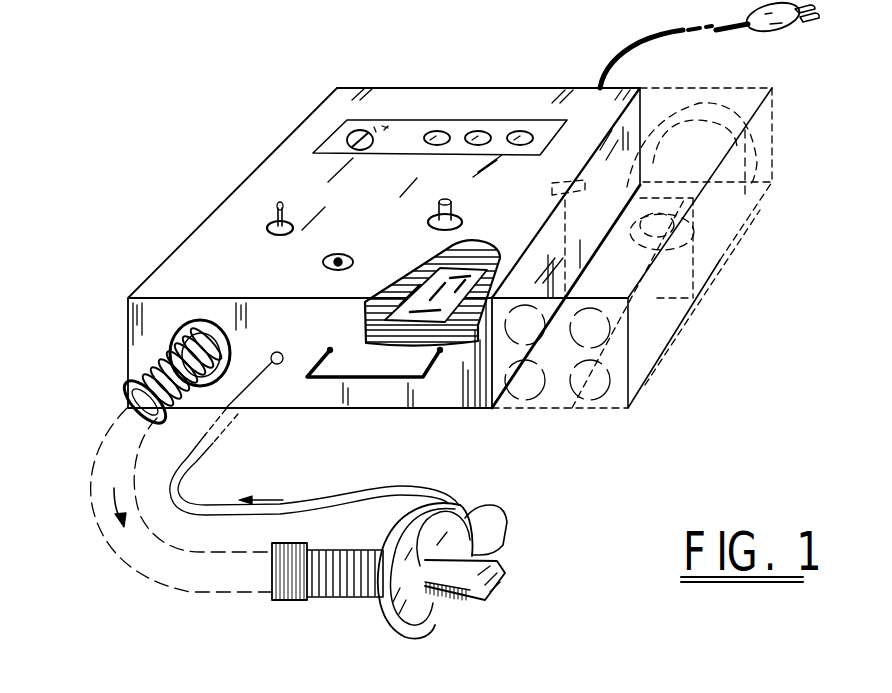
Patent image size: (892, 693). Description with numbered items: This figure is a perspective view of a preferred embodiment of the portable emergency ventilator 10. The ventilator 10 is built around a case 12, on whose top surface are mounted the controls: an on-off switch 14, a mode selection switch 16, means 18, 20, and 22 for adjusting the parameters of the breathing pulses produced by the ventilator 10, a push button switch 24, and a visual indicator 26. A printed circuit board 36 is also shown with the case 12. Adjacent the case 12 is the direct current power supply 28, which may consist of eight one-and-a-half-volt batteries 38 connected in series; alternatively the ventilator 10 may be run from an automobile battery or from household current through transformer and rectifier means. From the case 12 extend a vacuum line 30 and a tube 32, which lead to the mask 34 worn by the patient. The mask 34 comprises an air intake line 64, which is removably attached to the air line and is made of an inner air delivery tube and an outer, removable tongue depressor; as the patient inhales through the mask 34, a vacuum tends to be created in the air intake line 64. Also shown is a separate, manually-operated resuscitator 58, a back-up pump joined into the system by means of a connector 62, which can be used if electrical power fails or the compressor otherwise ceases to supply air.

The portable emergency ventilator 10 is at (178, 122).
The case 12 is at (188, 258).
The on-off switch 14 is at (278, 214).
The mode selection switch 16 is at (340, 138).
The means for adjusting the parameters of the breathing pulses 18 is at (440, 136).
The means for adjusting the parameters of the breathing pulses 20 is at (480, 136).
The means for adjusting the parameters of the breathing pulses 22 is at (522, 136).
The push button switch 24 is at (452, 210).
The visual indicator 26 is at (326, 266).
The direct current power supply 28 is at (660, 248).
The vacuum line 30 is at (188, 455).
The tube 32 is at (103, 516).
The mask 34 is at (488, 510).
The printed circuit board 36 is at (407, 262).
The batteries 38 is at (668, 344).
The manually-operated resuscitator 58 is at (740, 138).
The connector 62 is at (292, 600).
The air intake line 64 is at (500, 573).